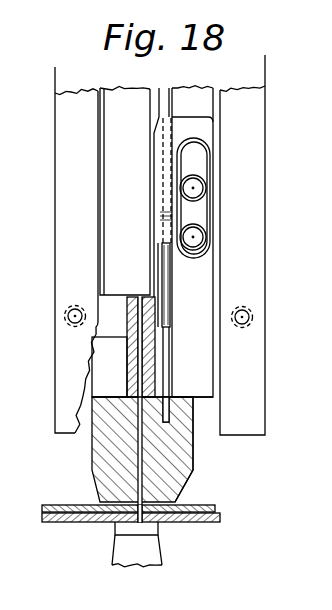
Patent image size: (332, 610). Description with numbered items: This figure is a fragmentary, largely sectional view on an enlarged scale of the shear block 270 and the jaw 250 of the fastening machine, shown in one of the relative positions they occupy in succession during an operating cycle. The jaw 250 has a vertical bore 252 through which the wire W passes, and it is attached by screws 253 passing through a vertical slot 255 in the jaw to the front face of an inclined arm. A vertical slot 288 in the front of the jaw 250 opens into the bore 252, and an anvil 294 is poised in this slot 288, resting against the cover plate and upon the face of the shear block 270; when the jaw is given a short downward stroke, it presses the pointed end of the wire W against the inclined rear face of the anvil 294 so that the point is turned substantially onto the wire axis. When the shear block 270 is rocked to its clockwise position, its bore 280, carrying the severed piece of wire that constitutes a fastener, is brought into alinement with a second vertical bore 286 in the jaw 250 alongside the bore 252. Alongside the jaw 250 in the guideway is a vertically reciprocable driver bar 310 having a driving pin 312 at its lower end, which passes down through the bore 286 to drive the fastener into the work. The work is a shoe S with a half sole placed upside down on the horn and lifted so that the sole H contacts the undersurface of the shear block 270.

The driver bar 310 is at (146, 195).
The jaw 250 is at (206, 318).
The vertical slot 255 is at (195, 153).
The screws 253 is at (207, 188).
The vertical bore 252 is at (160, 218).
The wire W is at (163, 260).
The vertical slot 288 is at (168, 282).
The anvil 294 is at (172, 377).
The vertical bore 286 is at (140, 357).
The bore 280 is at (140, 445).
The driving pin 312 is at (137, 458).
The shear block 270 is at (190, 465).
The sole H is at (208, 505).
The shoe S is at (220, 520).